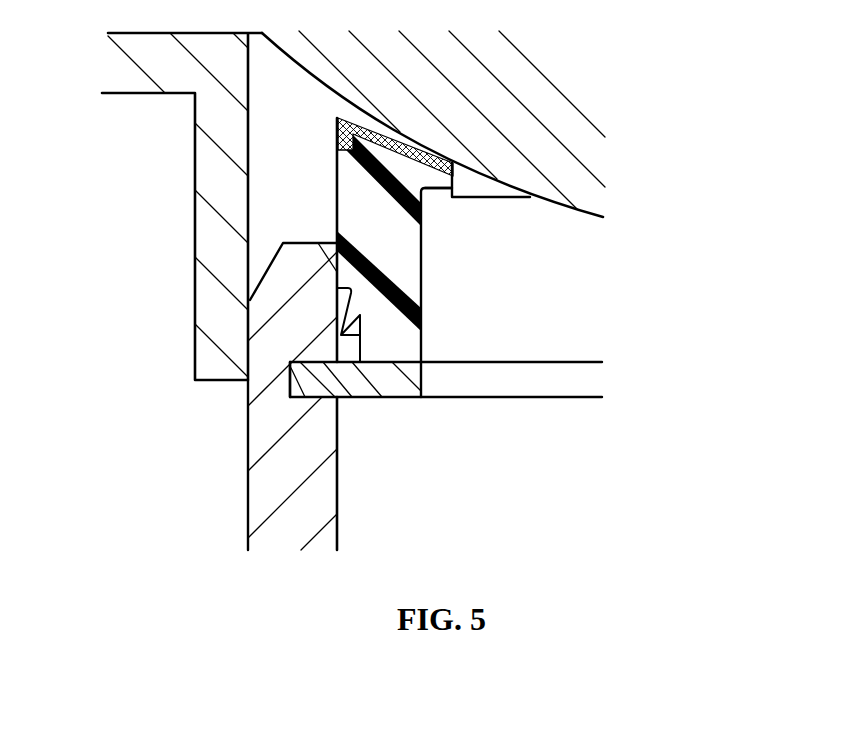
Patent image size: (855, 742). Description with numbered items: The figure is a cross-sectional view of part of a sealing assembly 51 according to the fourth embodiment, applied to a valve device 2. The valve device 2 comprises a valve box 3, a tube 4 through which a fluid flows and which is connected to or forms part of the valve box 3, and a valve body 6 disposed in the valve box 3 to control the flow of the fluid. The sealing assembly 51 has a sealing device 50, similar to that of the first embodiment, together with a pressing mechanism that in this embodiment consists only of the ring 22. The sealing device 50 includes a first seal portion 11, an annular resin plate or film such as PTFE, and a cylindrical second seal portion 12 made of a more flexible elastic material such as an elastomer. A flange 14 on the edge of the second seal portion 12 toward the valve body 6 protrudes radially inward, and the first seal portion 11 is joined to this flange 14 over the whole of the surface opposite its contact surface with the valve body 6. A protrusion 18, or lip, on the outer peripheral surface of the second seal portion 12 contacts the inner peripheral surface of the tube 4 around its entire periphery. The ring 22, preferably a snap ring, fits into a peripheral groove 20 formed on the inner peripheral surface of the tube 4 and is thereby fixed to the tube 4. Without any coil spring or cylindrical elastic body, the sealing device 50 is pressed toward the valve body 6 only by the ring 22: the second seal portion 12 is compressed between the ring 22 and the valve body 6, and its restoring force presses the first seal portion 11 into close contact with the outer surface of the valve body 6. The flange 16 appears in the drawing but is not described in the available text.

The valve device 2 is at (168, 193).
The valve box 3 is at (123, 93).
The tube 4 is at (258, 437).
The valve body 6 is at (305, 72).
The first seal portion 11 is at (337, 135).
The second seal portion 12 is at (421, 287).
The flange 14 is at (437, 189).
The flange 16 is at (421, 352).
The protrusion 18 is at (338, 311).
The peripheral groove 20 is at (293, 375).
The ring 22 is at (390, 397).
The sealing device 50 is at (326, 223).
The sealing assembly 51 is at (554, 422).